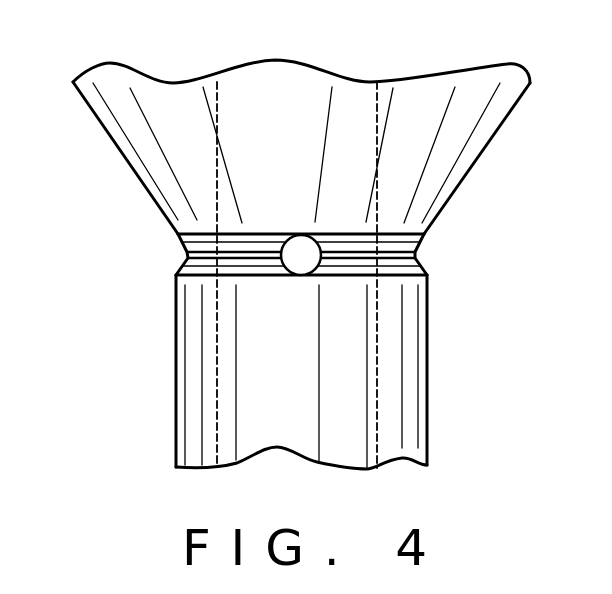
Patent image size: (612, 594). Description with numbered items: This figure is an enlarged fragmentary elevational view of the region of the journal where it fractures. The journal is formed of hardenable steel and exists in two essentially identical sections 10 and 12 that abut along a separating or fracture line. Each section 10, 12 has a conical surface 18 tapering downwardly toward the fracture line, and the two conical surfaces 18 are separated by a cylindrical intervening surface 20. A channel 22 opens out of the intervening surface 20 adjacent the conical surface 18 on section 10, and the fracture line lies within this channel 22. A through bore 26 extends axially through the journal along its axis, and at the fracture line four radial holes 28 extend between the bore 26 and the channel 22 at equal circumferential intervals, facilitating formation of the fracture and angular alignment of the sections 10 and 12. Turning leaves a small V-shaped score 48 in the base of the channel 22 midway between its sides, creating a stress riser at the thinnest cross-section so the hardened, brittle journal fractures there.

The journal section 10 is at (134, 170).
The journal section 12 is at (176, 425).
The conical surface 18 is at (455, 152).
The cylindrical intervening surface 20 is at (402, 365).
The channel 22 is at (187, 258).
The through bore 26 is at (377, 115).
The radial hole 28 is at (300, 257).
The score 48 is at (417, 252).